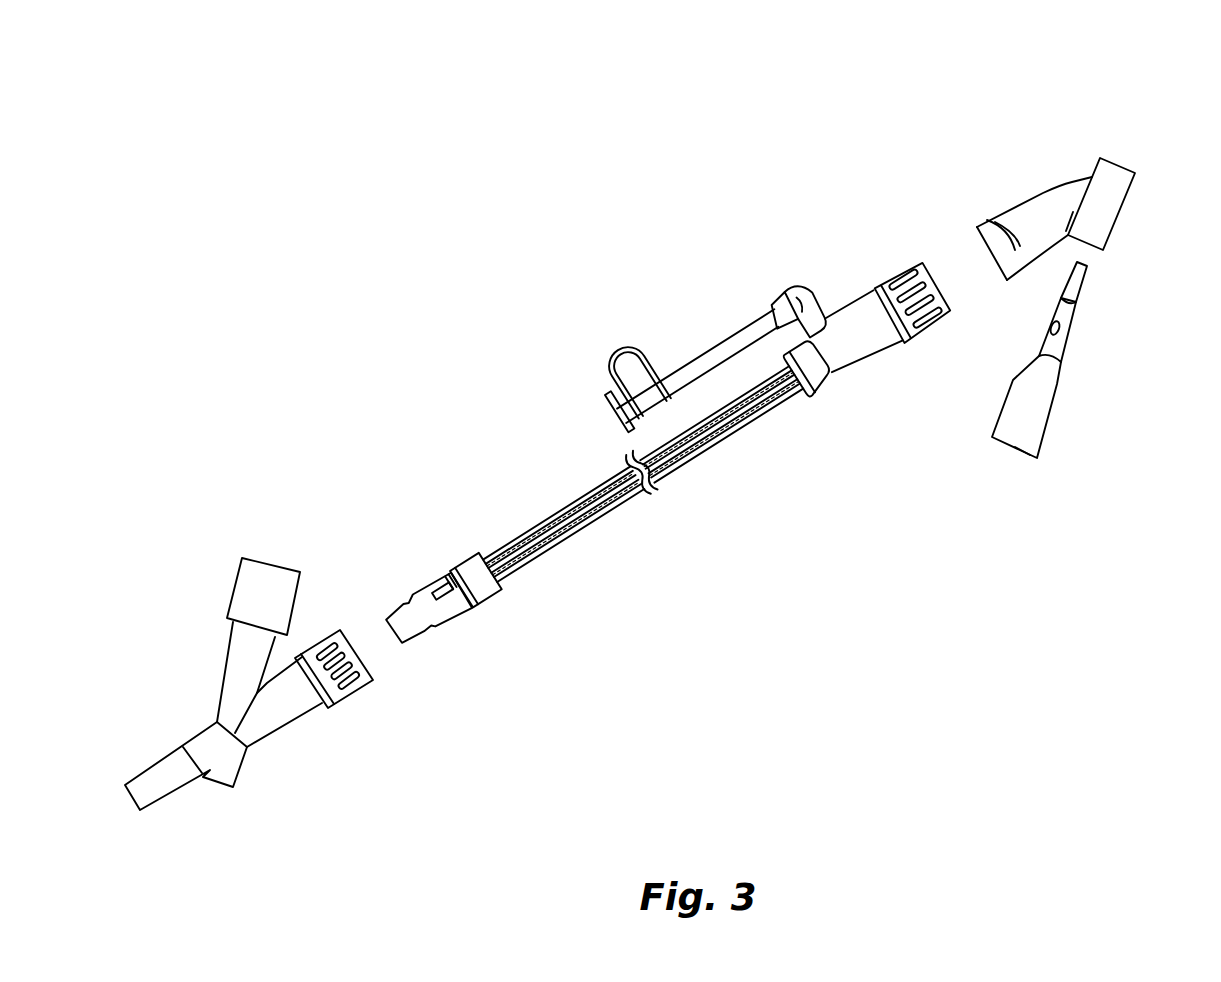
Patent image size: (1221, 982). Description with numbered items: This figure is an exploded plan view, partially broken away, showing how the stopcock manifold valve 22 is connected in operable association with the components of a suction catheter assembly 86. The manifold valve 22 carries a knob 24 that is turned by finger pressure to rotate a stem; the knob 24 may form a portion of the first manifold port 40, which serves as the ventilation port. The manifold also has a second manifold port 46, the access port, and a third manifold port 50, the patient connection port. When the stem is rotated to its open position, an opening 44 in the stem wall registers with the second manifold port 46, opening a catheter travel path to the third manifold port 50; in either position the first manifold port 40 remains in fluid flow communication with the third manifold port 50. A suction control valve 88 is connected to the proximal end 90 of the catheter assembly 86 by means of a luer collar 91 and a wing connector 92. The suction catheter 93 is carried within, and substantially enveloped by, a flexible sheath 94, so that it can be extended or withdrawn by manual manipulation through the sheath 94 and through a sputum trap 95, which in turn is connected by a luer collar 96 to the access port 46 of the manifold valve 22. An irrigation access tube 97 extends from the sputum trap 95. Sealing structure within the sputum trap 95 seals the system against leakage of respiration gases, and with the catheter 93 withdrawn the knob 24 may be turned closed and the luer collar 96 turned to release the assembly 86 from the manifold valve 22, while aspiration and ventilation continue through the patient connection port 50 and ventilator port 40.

The stopcock manifold valve 22 is at (1065, 156).
The second manifold port 46 is at (988, 252).
The third manifold port 50 is at (1080, 263).
The opening 44 is at (1062, 333).
The knob 24 is at (1058, 385).
The first manifold port 40 is at (1022, 441).
The catheter assembly 86 is at (772, 480).
The suction control valve 88 is at (282, 770).
The proximal end 90 is at (449, 624).
The luer collar 91 is at (352, 700).
The wing connector 92 is at (421, 598).
The suction catheter 93 is at (523, 533).
The flexible sheath 94 is at (597, 523).
The sputum trap 95 is at (861, 364).
The luer collar 96 is at (905, 270).
The irrigation access tube 97 is at (737, 333).